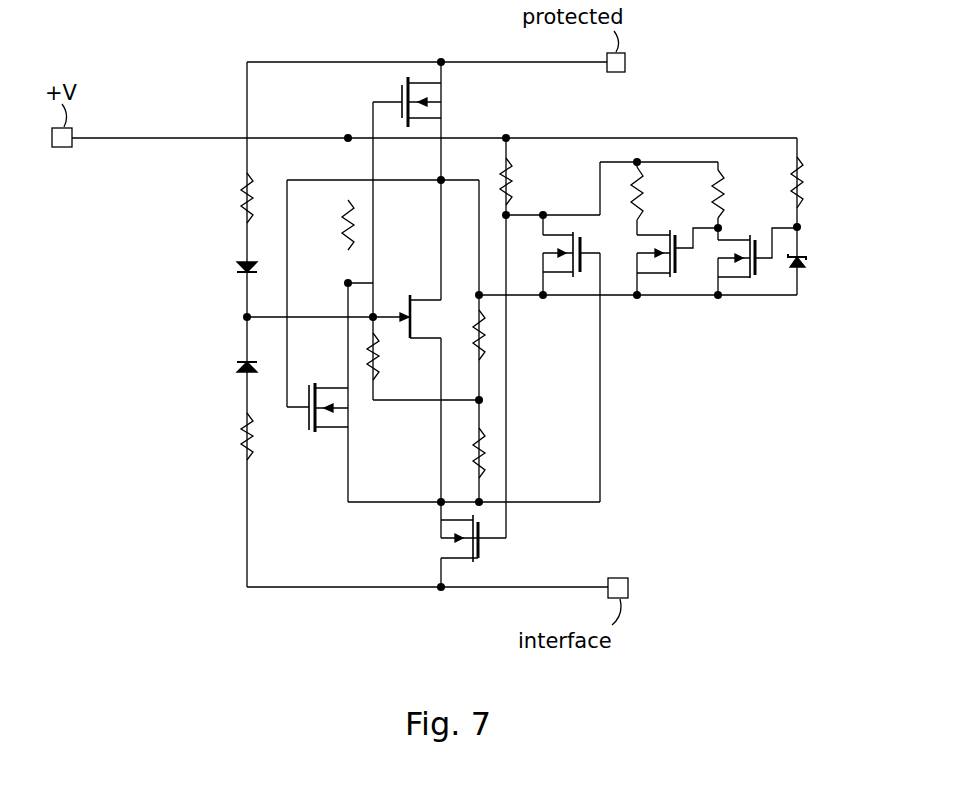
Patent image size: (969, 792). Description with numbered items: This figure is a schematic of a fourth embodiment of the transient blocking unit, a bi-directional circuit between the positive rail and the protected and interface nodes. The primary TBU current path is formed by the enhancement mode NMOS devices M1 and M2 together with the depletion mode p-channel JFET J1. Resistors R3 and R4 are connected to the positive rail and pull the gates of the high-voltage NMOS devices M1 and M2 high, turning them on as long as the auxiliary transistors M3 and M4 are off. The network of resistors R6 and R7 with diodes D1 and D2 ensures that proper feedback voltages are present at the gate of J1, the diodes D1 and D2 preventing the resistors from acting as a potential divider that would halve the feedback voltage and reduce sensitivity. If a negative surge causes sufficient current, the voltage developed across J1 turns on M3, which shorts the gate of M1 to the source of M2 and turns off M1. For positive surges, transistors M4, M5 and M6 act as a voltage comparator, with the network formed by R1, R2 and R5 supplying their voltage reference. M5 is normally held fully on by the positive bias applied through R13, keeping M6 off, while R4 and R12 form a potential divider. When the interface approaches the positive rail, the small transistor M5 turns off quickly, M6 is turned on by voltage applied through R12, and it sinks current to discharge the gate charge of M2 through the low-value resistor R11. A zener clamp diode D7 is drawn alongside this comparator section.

The resistor R6 is at (251, 185).
The diode D1 is at (240, 265).
The diode D2 is at (240, 368).
The resistor R7 is at (240, 440).
The resistor R3 is at (345, 232).
The primary transistor M1 is at (401, 82).
The auxiliary transistor M3 is at (308, 433).
The depletion mode device J1 is at (403, 300).
The resistor R5 is at (376, 350).
The resistor R1 is at (473, 338).
The resistor R2 is at (474, 456).
The resistor R4 is at (502, 186).
The primary transistor M2 is at (476, 561).
The auxiliary transistor M4 is at (574, 232).
The resistor R11 is at (641, 200).
The transistor M6 is at (670, 233).
The resistor R12 is at (722, 192).
The transistor M5 is at (750, 236).
The resistor R13 is at (802, 186).
The zener clamp diode D7 is at (808, 268).